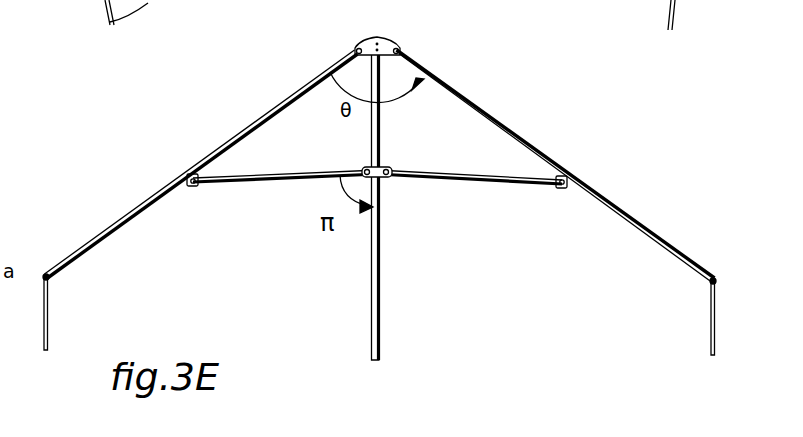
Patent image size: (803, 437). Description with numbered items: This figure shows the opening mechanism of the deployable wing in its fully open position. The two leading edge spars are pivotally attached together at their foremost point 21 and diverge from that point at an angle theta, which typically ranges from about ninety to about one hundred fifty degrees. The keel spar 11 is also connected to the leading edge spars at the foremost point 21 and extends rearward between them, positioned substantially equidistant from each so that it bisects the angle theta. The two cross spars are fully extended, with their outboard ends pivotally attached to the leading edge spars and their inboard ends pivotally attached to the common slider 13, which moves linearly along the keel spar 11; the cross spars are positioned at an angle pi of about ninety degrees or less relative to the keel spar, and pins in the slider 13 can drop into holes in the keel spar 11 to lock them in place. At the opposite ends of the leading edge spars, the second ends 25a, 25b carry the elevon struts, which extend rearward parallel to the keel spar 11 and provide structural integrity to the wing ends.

The keel spar 11 is at (376, 307).
The slider 13 is at (388, 170).
The foremost point 21 is at (383, 34).
The second end 25a is at (711, 278).
The second end 25b is at (45, 275).